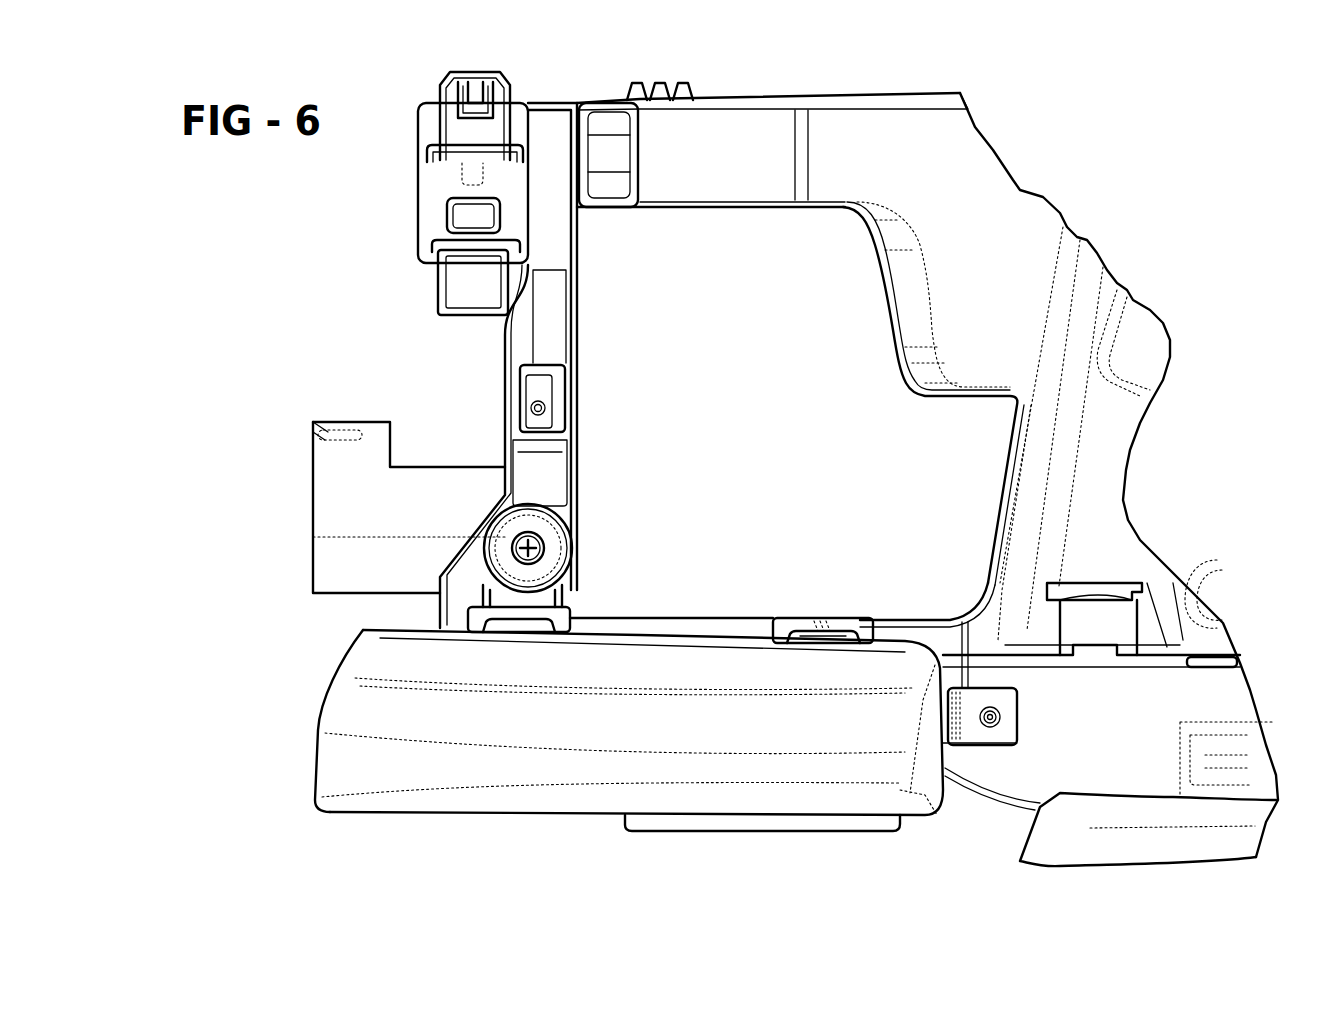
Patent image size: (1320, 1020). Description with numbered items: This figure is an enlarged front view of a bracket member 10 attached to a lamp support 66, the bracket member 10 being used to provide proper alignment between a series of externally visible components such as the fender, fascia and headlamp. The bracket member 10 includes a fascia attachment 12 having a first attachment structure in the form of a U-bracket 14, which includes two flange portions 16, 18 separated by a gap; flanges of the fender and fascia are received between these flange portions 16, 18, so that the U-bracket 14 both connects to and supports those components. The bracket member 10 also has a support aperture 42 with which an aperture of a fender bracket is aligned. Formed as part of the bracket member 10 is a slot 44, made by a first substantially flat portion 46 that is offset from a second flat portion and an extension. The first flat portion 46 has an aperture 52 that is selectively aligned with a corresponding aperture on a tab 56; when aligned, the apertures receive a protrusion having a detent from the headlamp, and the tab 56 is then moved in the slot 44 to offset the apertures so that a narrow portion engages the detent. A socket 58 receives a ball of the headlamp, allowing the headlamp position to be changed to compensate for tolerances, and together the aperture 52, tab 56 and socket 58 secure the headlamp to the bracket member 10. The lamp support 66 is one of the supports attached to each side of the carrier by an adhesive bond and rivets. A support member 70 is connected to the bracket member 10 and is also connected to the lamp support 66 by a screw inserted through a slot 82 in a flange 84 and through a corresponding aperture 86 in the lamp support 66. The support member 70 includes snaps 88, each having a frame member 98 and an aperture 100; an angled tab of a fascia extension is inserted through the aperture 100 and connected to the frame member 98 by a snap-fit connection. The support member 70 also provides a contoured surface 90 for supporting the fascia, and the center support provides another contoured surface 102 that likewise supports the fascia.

The bracket member 10 is at (556, 130).
The fascia attachment 12 is at (447, 495).
The U-bracket 14 is at (365, 420).
The flange portion 16 is at (335, 430).
The flange portion 18 is at (330, 455).
The support aperture 42 is at (545, 408).
The slot 44 is at (442, 132).
The first substantially flat portion 46 is at (445, 172).
The aperture 52 is at (455, 215).
The tab 56 is at (460, 290).
The socket 58 is at (550, 548).
The lamp support 66 is at (895, 135).
The support member 70 is at (312, 765).
The slot 82 is at (963, 630).
The flange 84 is at (1005, 738).
The aperture 86 is at (990, 715).
The snaps 88 is at (577, 615).
The contoured surface 90 is at (696, 730).
The frame member 98 is at (790, 620).
The aperture 100 is at (822, 631).
The contoured surface 102 is at (1080, 825).